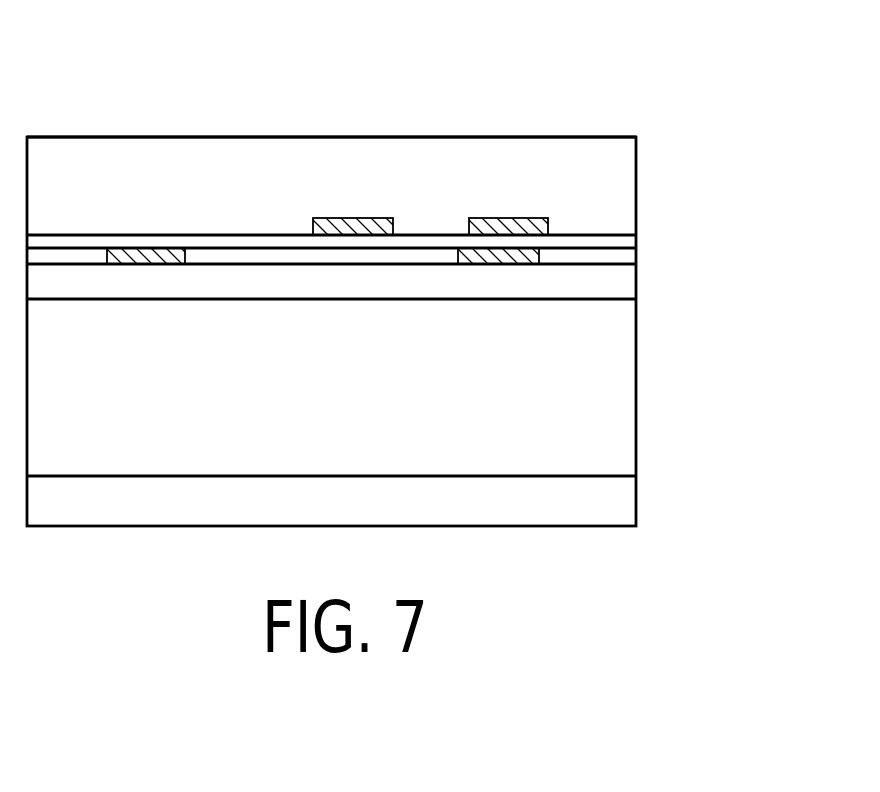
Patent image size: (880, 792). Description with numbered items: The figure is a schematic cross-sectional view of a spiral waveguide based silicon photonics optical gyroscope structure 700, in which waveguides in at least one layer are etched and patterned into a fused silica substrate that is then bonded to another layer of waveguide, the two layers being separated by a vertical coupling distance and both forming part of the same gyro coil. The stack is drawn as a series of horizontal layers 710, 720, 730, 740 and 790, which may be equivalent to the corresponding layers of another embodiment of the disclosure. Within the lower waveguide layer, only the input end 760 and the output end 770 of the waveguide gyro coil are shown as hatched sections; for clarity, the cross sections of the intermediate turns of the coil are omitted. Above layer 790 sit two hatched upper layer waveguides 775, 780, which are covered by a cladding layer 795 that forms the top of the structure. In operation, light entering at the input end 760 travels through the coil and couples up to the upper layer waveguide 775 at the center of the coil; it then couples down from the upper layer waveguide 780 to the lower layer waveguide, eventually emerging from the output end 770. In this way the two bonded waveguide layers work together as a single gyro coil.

The structure 700 is at (600, 68).
The layer 710 is at (625, 502).
The layer 720 is at (625, 398).
The layer 730 is at (625, 283).
The layer 740 is at (625, 255).
The input end 760 is at (125, 260).
The output end 770 is at (513, 260).
The upper layer waveguide 775 is at (368, 228).
The upper layer waveguide 780 is at (520, 228).
The layer 790 is at (625, 242).
The cladding layer 795 is at (625, 161).